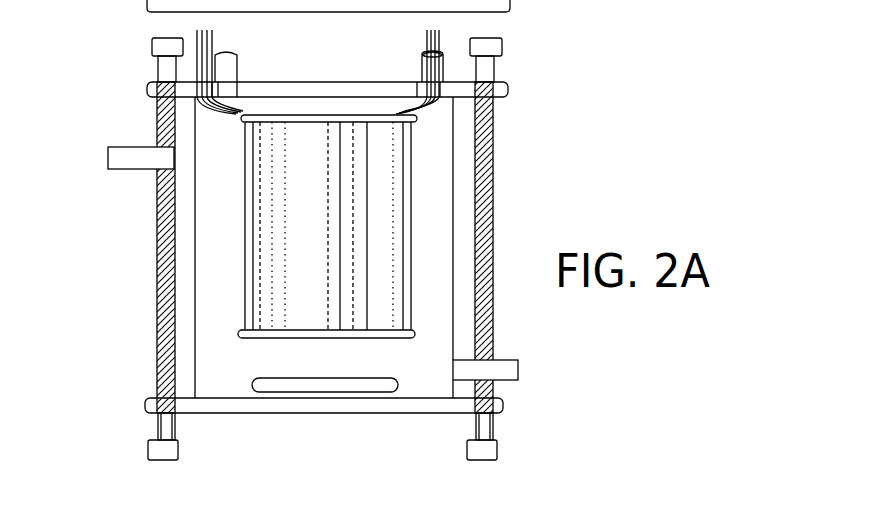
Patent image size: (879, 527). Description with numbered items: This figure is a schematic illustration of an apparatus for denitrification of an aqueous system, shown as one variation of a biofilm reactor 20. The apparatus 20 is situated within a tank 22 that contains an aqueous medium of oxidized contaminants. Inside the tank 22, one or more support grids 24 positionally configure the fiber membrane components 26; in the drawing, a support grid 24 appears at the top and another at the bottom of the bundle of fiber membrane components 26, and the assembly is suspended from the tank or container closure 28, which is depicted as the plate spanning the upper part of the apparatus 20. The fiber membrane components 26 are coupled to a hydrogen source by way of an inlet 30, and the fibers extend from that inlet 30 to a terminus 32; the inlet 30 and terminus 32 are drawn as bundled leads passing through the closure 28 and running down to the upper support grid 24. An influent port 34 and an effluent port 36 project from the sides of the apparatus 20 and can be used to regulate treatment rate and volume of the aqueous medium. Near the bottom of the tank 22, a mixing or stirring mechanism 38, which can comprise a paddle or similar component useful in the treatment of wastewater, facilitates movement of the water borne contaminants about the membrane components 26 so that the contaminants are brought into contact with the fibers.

The biofilm reactor 20 is at (622, 157).
The tank 22 is at (192, 345).
The support grid 24 is at (283, 113).
The fiber membrane component 26 is at (263, 238).
The tank closure 28 is at (333, 82).
The inlet 30 is at (443, 32).
The terminus 32 is at (193, 39).
The influent port 34 is at (116, 158).
The support block 36 is at (506, 369).
The mixing/stirring mechanism 38 is at (340, 386).